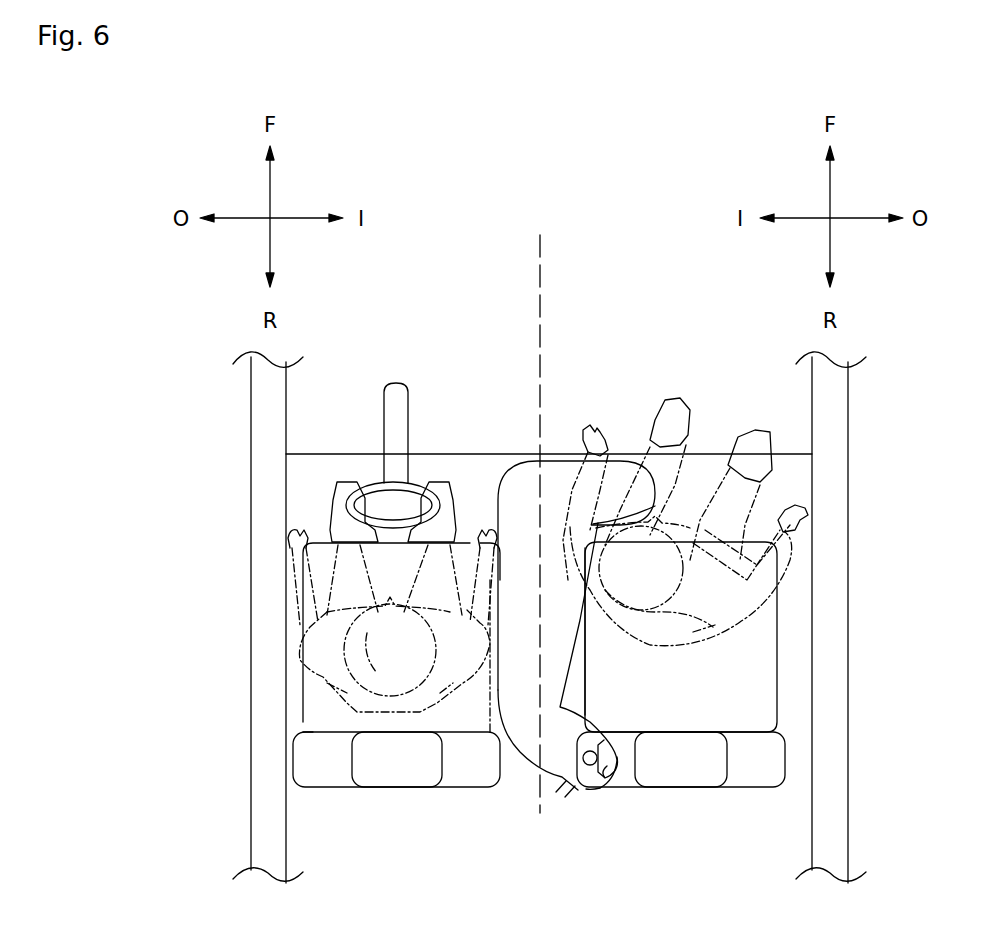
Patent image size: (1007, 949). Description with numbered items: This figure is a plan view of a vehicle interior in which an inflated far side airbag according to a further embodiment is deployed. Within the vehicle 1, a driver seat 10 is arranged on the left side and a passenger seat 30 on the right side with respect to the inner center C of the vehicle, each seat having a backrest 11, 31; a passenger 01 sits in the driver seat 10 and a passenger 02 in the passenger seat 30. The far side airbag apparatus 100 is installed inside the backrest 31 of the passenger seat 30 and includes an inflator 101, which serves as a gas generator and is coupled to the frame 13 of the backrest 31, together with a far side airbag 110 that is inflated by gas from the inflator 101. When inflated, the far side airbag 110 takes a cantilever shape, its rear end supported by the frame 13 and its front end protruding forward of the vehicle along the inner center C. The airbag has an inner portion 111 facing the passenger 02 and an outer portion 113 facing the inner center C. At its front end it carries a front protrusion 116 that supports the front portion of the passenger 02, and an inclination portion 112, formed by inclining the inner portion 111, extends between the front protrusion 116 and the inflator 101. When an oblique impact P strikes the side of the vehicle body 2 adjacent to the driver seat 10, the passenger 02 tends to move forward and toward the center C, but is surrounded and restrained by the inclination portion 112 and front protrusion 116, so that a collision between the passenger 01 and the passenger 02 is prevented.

The vehicle 1 is at (312, 398).
The vehicle body 2 is at (260, 493).
The oblique impact P is at (230, 469).
The inner center C is at (545, 250).
The driver seat 10 is at (298, 700).
The backrest 11 is at (307, 757).
The passenger 01 is at (325, 656).
The passenger 02 is at (727, 592).
The frame 13 is at (615, 768).
The passenger seat 30 is at (790, 642).
The backrest 31 is at (770, 757).
The far side airbag apparatus 100 is at (558, 810).
The inflator 101 is at (588, 790).
The far side airbag 110 is at (497, 466).
The inner portion 111 is at (563, 688).
The inclination portion 112 is at (593, 580).
The outer portion 113 is at (515, 590).
The front protrusion 116 is at (620, 458).